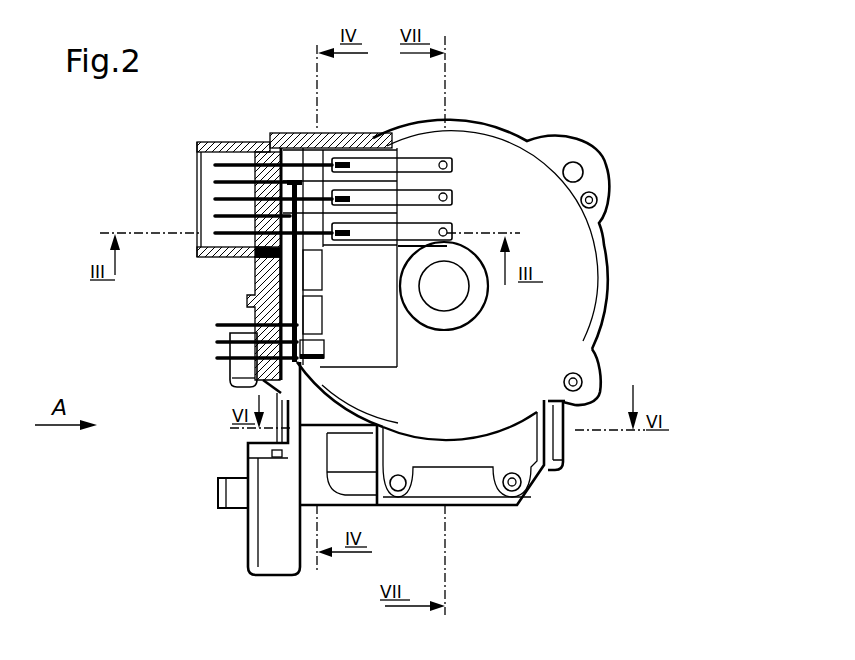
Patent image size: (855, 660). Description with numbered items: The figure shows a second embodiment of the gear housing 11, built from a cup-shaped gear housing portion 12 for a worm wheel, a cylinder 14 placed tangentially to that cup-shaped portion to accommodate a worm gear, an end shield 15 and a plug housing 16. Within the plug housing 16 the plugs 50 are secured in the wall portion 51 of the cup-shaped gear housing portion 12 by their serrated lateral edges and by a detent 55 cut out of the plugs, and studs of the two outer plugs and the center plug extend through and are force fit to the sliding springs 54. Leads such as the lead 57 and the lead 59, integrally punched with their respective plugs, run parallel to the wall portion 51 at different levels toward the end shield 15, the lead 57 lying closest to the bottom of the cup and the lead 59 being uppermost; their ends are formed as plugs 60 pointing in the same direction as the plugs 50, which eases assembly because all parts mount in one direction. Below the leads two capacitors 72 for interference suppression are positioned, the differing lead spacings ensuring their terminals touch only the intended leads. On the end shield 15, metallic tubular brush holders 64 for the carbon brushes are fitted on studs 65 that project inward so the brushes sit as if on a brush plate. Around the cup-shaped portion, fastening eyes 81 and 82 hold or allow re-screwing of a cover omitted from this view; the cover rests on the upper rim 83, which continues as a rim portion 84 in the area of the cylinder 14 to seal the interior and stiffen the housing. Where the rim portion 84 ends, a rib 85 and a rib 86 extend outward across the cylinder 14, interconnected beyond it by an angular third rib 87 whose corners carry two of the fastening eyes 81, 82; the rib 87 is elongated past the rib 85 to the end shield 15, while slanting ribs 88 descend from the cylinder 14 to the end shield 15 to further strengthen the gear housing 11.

The gear housing 11 is at (545, 136).
The cup-shaped gear housing portion 12 is at (497, 152).
The cylinder 14 is at (480, 462).
The end shield 15 is at (278, 530).
The plug housing 16 is at (230, 142).
The plugs 50 is at (217, 232).
The wall portion 51 is at (290, 268).
The sliding springs 54 is at (446, 160).
The detent 55 is at (250, 252).
The lead 57 is at (262, 292).
The lead 59 is at (326, 348).
The plugs 60 is at (215, 358).
The brush holders 64 is at (232, 368).
The studs 65 is at (243, 388).
The capacitors 72 is at (324, 270).
The fastening eye 81 is at (597, 200).
The second fastening eye 82 is at (583, 165).
The upper rim 83 is at (604, 324).
The rim portion 84 is at (430, 436).
The rib 85 is at (485, 456).
The rib 86 is at (560, 456).
The third rib 87 is at (458, 506).
The ribs 88 is at (327, 431).